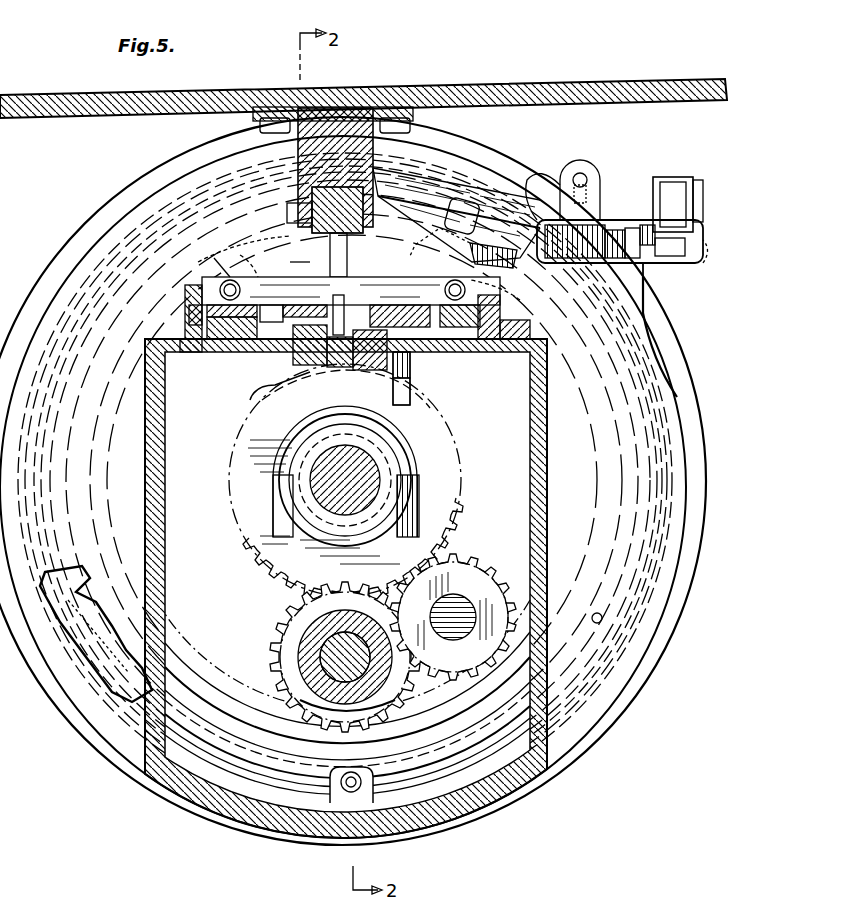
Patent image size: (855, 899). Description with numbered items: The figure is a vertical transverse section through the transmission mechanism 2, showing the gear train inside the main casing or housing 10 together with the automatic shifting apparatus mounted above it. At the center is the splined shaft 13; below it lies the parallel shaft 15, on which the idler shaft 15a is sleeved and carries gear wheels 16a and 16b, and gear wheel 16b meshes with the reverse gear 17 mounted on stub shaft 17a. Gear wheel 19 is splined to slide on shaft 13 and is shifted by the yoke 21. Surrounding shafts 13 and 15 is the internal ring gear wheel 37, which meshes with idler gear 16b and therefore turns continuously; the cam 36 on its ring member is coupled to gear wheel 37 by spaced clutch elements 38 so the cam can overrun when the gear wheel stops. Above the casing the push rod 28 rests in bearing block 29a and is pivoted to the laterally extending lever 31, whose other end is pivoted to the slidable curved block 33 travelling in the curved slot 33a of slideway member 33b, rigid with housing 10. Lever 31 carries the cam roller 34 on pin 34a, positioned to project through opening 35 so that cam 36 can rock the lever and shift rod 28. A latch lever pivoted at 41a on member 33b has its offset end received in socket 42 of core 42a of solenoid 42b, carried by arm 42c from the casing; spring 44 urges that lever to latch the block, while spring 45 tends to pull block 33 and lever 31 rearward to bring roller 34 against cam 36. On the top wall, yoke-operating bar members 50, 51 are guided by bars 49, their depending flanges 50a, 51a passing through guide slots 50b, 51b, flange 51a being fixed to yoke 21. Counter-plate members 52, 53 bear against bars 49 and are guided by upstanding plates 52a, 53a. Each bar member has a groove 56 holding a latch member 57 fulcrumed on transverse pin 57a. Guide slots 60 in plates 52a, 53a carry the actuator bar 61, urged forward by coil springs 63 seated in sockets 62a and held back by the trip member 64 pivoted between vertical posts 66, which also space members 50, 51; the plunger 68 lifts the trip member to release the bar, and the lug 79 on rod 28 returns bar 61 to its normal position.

The transmission mechanism 2 is at (86, 220).
The main casing or housing 10 is at (146, 514).
The splined shaft 13 is at (365, 505).
The shaft 15 is at (300, 640).
The idler shaft 15a is at (310, 662).
The gear wheel 16a is at (290, 620).
The gear wheel 16b is at (296, 700).
The gear wheel 17 is at (476, 560).
The stub shaft 17a is at (452, 630).
The gear wheel 19 is at (272, 585).
The yoke 21 is at (395, 420).
The push rod 28 is at (288, 216).
The bearing block 29a is at (326, 104).
The lever 31 is at (539, 180).
The slidable curved block 33 is at (560, 218).
The curved slot 33a is at (652, 296).
The slideway member 33b is at (632, 226).
The cam roller or disc 34 is at (508, 262).
The pin 34a is at (440, 235).
The opening 35 is at (452, 185).
The cam 36 is at (92, 468).
The internal ring gear wheel 37 is at (347, 701).
The clutch elements 38 is at (78, 650).
The pivot 41a is at (650, 268).
The socket 42 is at (648, 222).
The core or armature 42a is at (670, 178).
The solenoid 42b is at (702, 192).
The arm 42c is at (719, 243).
The spring 44 is at (668, 244).
The spring 45 is at (580, 172).
The outside bars 49 is at (425, 302).
The yoke-operating bar member 50 is at (305, 370).
The flange 50a is at (335, 372).
The guide slot 50b is at (280, 352).
The yoke-operating bar member 51 is at (392, 340).
The flange 51a is at (405, 405).
The guide slot 51b is at (404, 380).
The counter-plate or bar member 52 is at (214, 352).
The guide plate 52a is at (184, 324).
The counter-plate or bar member 53 is at (458, 352).
The guide plate 53a is at (496, 352).
The groove or recess 56 is at (234, 352).
The latch or lever member 57 is at (275, 292).
The transverse pin 57a is at (484, 350).
The guide slots 60 is at (200, 276).
The actuator bar 61 is at (274, 292).
The sockets or bores 62a is at (248, 272).
The coil springs 63 is at (213, 259).
The detent or trip member 64 is at (297, 265).
The vertical posts 66 is at (348, 290).
The plunger 68 is at (340, 366).
The lug member 79 is at (332, 260).